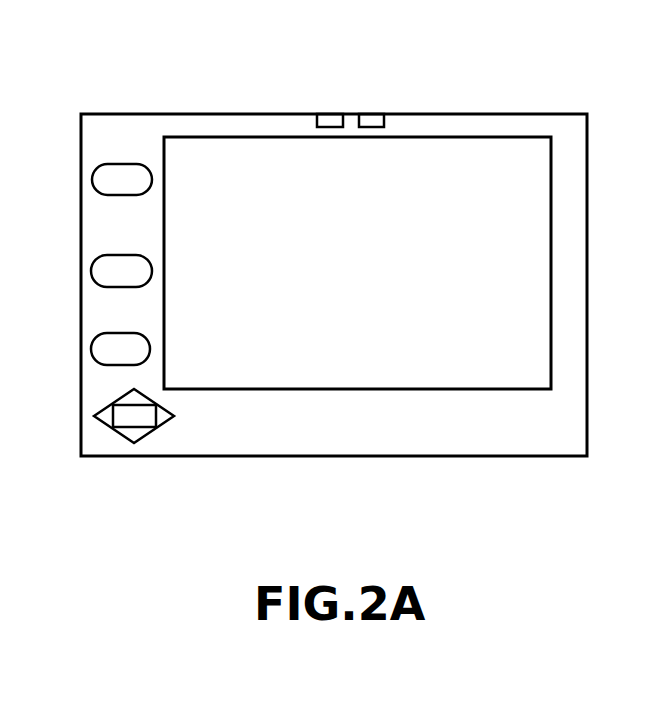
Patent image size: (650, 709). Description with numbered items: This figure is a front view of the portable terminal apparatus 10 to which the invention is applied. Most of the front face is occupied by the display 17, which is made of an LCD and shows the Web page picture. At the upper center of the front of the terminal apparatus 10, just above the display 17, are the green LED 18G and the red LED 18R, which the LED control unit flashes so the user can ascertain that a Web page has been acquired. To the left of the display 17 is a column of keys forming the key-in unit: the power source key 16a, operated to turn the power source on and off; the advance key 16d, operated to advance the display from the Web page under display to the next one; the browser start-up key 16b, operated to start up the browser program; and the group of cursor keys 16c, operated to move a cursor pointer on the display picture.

The portable terminal apparatus 10 is at (492, 108).
The power source key 16a is at (120, 163).
The browser start-up key 16b is at (115, 332).
The group of cursor keys 16c is at (122, 396).
The advance key 16d is at (115, 253).
The display 17 is at (390, 391).
The green LED 18G is at (331, 113).
The red LED 18R is at (373, 113).